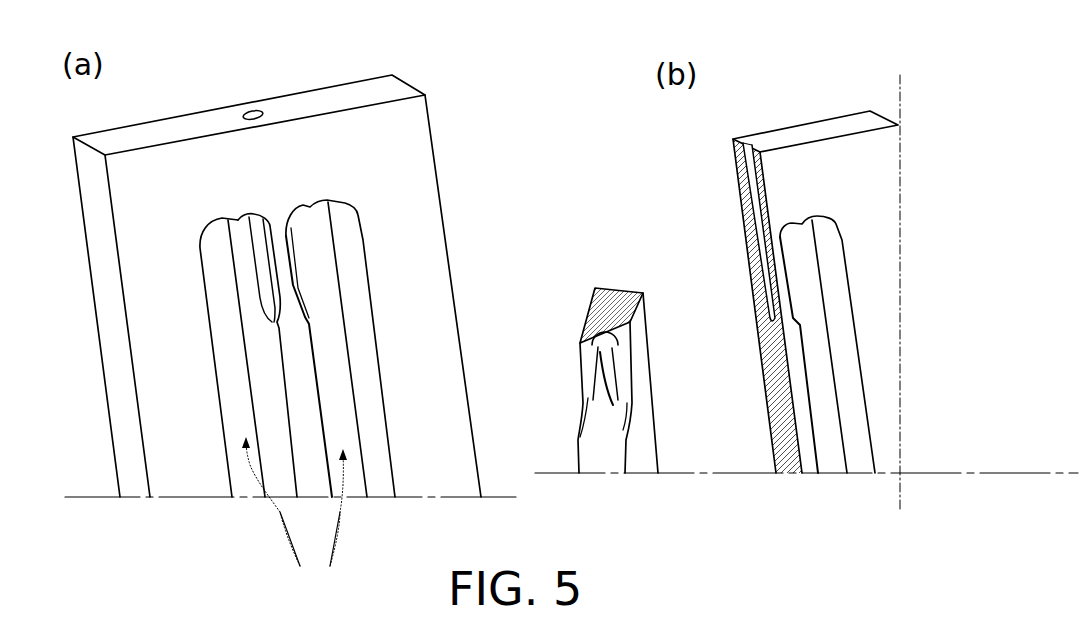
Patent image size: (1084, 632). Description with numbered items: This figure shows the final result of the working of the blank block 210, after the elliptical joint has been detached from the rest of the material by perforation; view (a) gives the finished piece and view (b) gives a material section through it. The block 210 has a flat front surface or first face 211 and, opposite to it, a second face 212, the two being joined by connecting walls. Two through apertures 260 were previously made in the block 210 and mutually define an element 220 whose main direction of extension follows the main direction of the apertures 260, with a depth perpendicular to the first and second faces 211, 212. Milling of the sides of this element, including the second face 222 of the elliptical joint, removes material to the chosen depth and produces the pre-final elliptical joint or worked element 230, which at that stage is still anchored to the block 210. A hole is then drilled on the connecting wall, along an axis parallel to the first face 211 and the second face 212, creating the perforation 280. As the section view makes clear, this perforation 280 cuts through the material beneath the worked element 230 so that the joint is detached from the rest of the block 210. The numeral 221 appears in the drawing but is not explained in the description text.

The blank block 210 is at (606, 288).
The front surface 211 is at (410, 164).
The second face 212 is at (95, 302).
The element 220 is at (305, 387).
The first side surface of tooth 221 is at (577, 458).
The second face of the elliptical joint 222 is at (638, 452).
The worked element 230 is at (296, 290).
The through apertures 260 is at (294, 514).
The perforation 280 is at (254, 108).